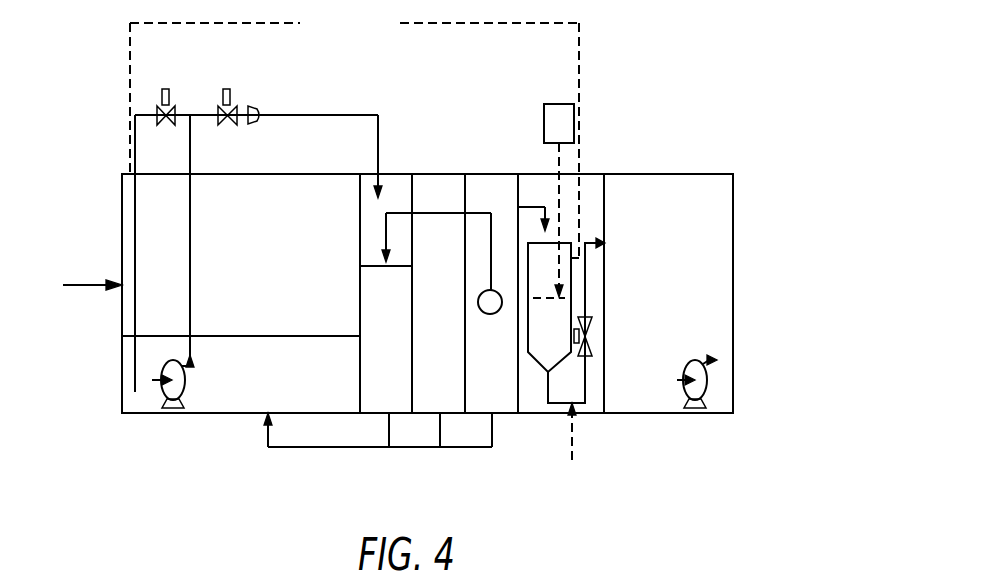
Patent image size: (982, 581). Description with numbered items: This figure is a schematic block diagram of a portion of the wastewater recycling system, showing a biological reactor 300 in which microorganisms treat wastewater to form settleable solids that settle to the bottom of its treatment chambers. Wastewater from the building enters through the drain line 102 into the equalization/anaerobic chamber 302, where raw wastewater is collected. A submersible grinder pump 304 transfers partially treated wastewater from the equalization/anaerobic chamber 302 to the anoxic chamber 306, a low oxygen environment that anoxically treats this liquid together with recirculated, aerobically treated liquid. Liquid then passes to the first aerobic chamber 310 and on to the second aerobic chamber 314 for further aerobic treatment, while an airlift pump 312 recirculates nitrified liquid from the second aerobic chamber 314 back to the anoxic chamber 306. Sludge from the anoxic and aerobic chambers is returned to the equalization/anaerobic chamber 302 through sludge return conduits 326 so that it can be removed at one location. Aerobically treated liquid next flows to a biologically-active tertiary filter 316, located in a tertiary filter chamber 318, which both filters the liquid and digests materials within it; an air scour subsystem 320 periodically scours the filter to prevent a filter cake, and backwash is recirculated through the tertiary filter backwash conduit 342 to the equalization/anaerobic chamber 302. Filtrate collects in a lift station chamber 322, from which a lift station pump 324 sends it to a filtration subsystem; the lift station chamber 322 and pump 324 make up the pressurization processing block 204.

The biological reactor 300 is at (122, 185).
The equalization/anaerobic chamber 302 is at (181, 247).
The submersible grinder pump 304 is at (163, 395).
The anoxic chamber 306 is at (398, 373).
The first aerobic chamber 310 is at (453, 373).
The airlift pump 312 is at (493, 291).
The second aerobic chamber 314 is at (505, 373).
The biologically-active tertiary filter 316 is at (540, 365).
The tertiary filter chamber 318 is at (554, 202).
The air scour subsystem 320 is at (544, 123).
The lift station chamber 322 is at (700, 257).
The lift station pump 324 is at (707, 393).
The sludge return conduits 326 is at (315, 447).
The tertiary filter backwash conduit 342 is at (579, 46).
The drain line 102 is at (88, 285).
The pressurization processing block 204 is at (697, 418).